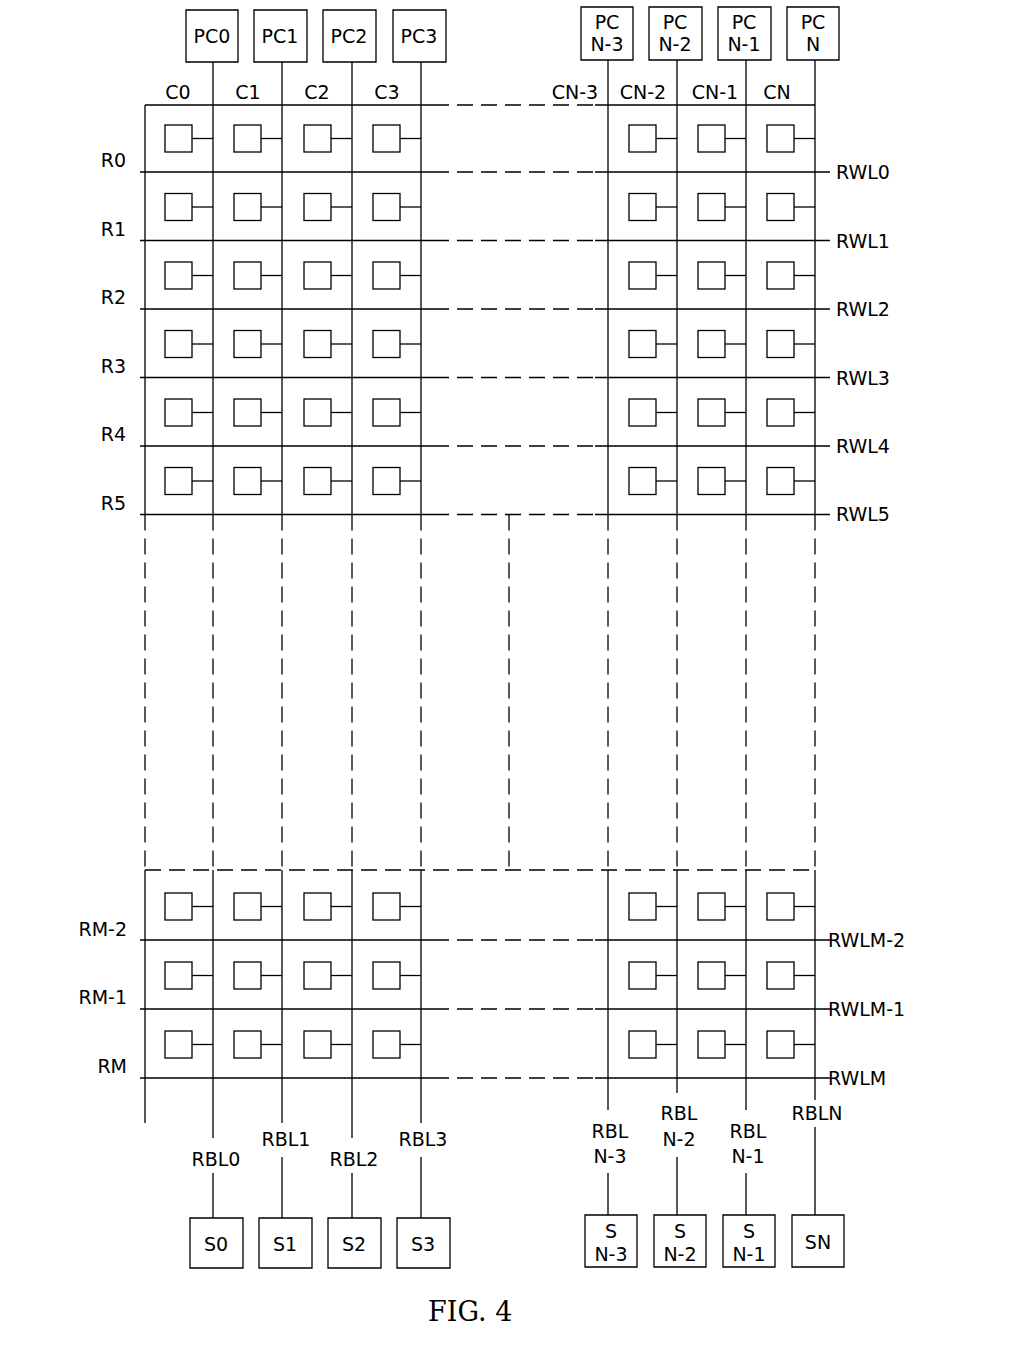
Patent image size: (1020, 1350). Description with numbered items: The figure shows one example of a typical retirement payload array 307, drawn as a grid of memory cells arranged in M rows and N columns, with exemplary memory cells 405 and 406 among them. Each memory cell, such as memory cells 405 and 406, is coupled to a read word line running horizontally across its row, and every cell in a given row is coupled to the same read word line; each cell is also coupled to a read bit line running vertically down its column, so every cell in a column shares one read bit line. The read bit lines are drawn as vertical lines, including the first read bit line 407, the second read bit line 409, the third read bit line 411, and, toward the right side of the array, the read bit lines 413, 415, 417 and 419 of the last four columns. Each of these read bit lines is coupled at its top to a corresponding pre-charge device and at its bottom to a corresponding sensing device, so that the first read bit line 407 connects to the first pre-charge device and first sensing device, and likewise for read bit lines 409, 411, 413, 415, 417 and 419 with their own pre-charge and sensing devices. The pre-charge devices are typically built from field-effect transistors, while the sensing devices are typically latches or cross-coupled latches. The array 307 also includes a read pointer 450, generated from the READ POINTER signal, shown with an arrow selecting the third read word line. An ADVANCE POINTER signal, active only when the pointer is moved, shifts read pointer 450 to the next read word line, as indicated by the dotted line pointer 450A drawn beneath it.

The retirement payload array 307 is at (133, 695).
The memory cell 405 is at (245, 193).
The memory cell 406 is at (402, 396).
The read bit line RBL0 407 is at (215, 516).
The read bit line RBL1 409 is at (284, 516).
The read bit line RBL2 411 is at (354, 516).
The read bit line RBLN-3 413 is at (610, 516).
The read bit line RBLN-2 415 is at (679, 516).
The read bit line RBLN-1 417 is at (748, 516).
The read bit line RBLN 419 is at (817, 516).
The read pointer 450 is at (100, 277).
The dotted line pointer 450A is at (51, 340).